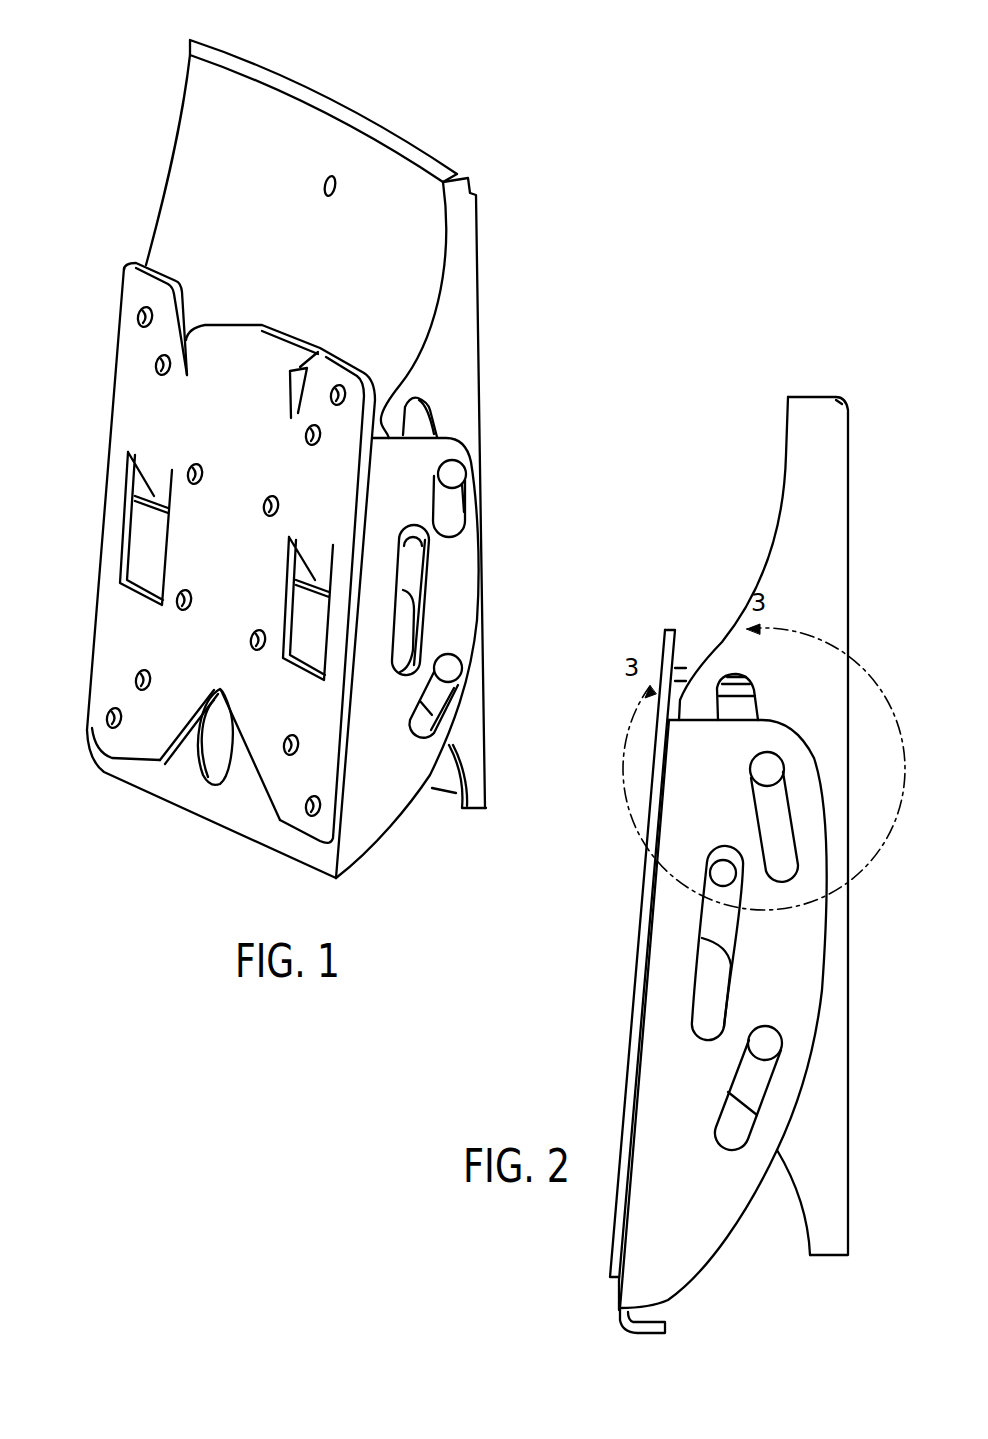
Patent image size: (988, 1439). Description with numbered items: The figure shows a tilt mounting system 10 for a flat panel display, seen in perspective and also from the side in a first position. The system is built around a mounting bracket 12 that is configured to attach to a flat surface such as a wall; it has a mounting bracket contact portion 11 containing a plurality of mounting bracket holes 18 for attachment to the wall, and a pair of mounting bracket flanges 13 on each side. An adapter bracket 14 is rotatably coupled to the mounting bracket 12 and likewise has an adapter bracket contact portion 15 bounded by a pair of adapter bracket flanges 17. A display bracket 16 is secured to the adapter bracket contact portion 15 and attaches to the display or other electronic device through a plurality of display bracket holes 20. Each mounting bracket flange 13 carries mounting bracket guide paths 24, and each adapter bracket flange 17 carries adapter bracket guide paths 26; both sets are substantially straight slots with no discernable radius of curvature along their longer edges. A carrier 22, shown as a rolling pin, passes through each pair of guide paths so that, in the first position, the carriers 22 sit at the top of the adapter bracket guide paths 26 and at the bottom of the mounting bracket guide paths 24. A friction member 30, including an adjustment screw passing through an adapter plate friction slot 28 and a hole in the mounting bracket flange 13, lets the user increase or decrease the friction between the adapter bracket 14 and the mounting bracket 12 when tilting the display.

In FIG. 1, the mounting system 10 is at (133, 58).
In FIG. 2, the mounting system 10 is at (710, 504).
In FIG. 1, the mounting bracket contact portion 11 is at (300, 85).
In FIG. 1, the mounting bracket 12 is at (472, 358).
In FIG. 2, the mounting bracket 12 is at (835, 437).
In FIG. 1, the mounting bracket flanges 13 is at (185, 175).
In FIG. 2, the mounting bracket flanges 13 is at (825, 1212).
In FIG. 1, the adapter bracket 14 is at (372, 855).
In FIG. 2, the adapter bracket 14 is at (662, 1263).
In FIG. 1, the adapter bracket contact portion 15 is at (140, 745).
In FIG. 1, the display bracket 16 is at (128, 400).
In FIG. 2, the display bracket 16 is at (672, 628).
In FIG. 1, the adapter bracket flanges 17 is at (412, 817).
In FIG. 2, the adapter bracket flanges 17 is at (658, 1152).
In FIG. 1, the mounting bracket holes 18 is at (333, 178).
In FIG. 1, the display bracket holes 20 is at (156, 366).
In FIG. 1, the carrier 22 is at (454, 474).
In FIG. 2, the carrier 22 is at (768, 770).
In FIG. 1, the mounting bracket guide paths 24 is at (425, 420).
In FIG. 2, the mounting bracket guide paths 24 is at (755, 695).
In FIG. 1, the adapter bracket guide paths 26 is at (458, 512).
In FIG. 2, the adapter bracket guide paths 26 is at (782, 860).
In FIG. 1, the adapter plate friction slot 28 is at (421, 577).
In FIG. 2, the adapter plate friction slot 28 is at (708, 982).
In FIG. 1, the friction member 30 is at (428, 532).
In FIG. 2, the friction member 30 is at (722, 870).